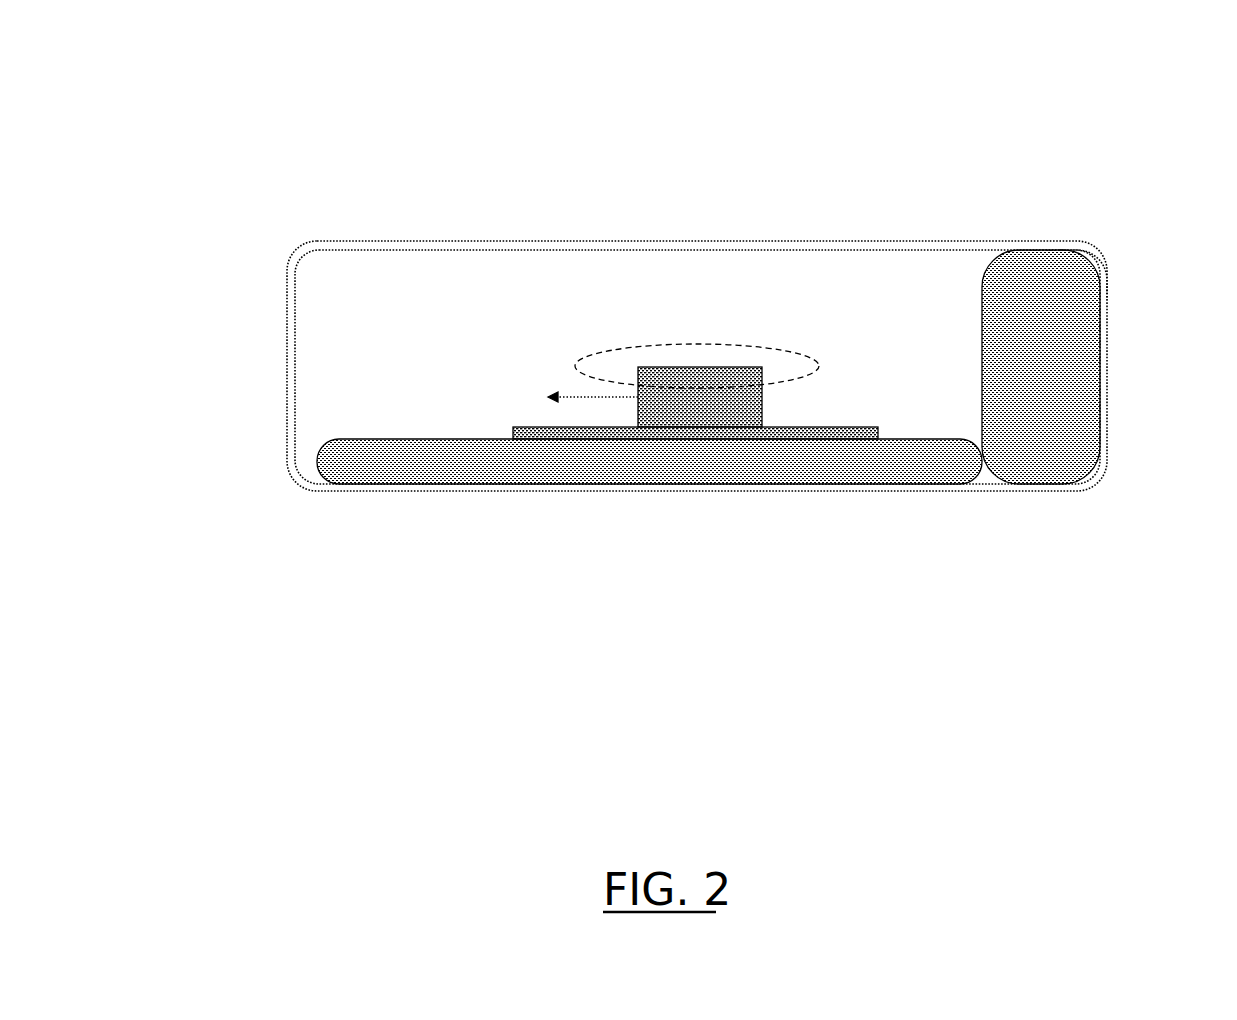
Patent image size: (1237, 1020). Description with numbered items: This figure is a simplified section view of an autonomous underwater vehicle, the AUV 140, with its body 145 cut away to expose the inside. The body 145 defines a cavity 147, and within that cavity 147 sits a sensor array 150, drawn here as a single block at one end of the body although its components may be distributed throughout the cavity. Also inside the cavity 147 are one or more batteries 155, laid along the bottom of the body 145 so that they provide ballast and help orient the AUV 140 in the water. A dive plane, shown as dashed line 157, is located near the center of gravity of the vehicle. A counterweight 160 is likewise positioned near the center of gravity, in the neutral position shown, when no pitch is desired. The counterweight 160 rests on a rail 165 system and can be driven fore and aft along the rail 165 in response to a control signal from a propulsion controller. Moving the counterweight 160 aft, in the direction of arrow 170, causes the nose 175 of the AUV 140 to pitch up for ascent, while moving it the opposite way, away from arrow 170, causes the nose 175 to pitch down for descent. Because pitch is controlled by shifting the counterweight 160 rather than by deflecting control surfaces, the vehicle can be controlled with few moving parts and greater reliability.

The AUV 140 is at (335, 105).
The body 145 is at (378, 235).
The cavity 147 is at (316, 322).
The sensor array 150 is at (1083, 327).
The batteries 155 is at (408, 470).
The dive plane 157 is at (777, 343).
The counterweight 160 is at (675, 363).
The rail 165 is at (825, 425).
The arrow 170 is at (571, 390).
The nose 175 is at (1092, 250).